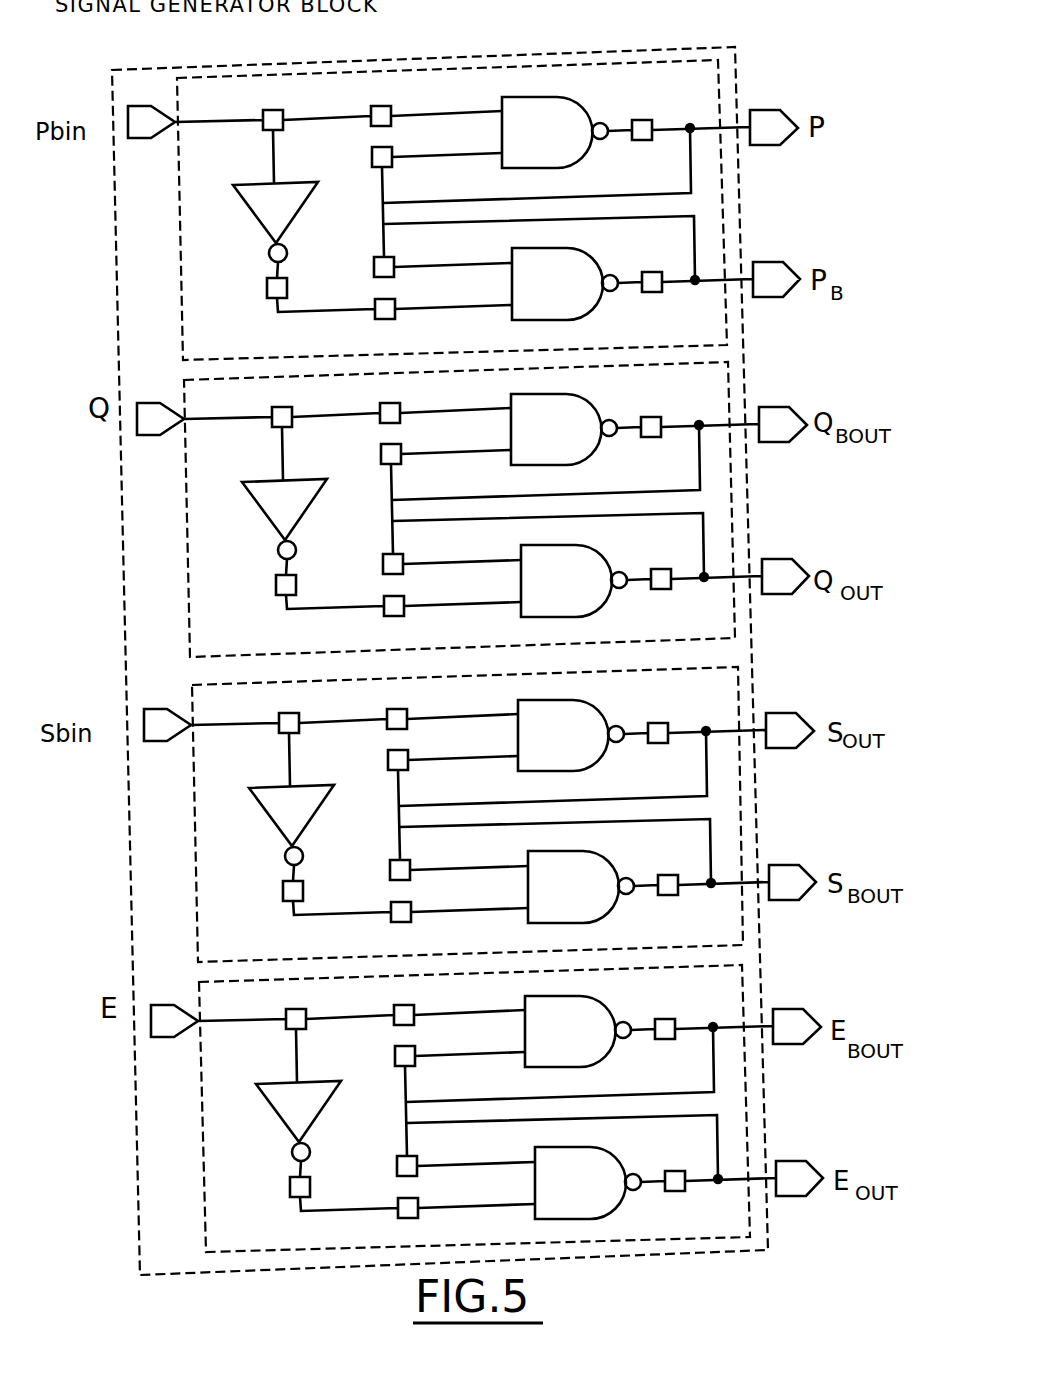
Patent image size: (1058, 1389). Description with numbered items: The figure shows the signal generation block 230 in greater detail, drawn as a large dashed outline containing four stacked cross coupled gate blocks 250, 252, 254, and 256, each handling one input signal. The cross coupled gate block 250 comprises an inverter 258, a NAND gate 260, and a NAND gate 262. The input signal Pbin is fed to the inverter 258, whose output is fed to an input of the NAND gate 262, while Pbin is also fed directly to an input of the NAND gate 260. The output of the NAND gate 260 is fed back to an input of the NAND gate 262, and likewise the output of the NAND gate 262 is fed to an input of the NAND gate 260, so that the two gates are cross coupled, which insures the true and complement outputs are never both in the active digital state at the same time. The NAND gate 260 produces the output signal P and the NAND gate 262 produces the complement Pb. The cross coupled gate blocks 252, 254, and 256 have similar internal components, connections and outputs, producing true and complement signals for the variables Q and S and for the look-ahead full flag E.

The signal generation block 230 is at (452, 55).
The cross coupled gate block 250 is at (580, 62).
The cross coupled gate block 252 is at (183, 523).
The cross coupled gate block 254 is at (193, 843).
The cross coupled gate block 256 is at (203, 1113).
The inverter 258 is at (258, 223).
The NAND gate 260 is at (586, 109).
The NAND gate 262 is at (590, 258).